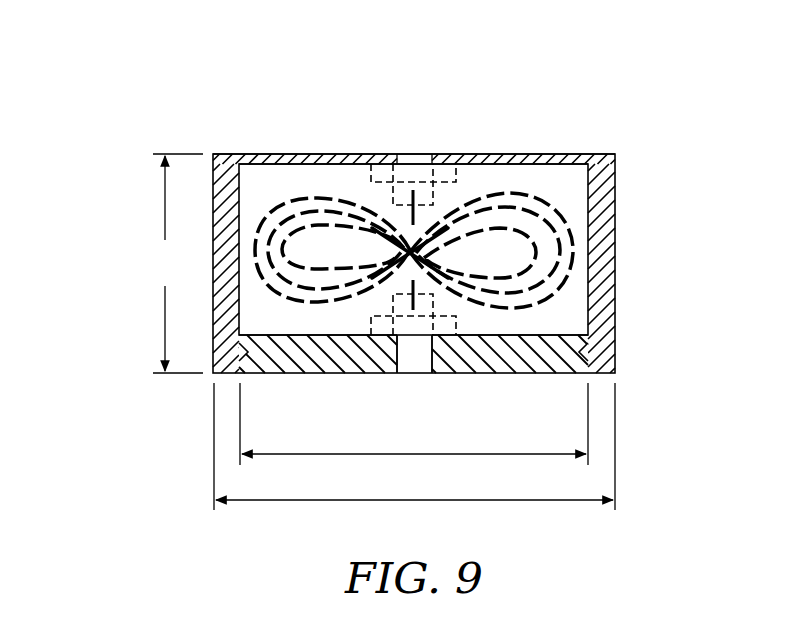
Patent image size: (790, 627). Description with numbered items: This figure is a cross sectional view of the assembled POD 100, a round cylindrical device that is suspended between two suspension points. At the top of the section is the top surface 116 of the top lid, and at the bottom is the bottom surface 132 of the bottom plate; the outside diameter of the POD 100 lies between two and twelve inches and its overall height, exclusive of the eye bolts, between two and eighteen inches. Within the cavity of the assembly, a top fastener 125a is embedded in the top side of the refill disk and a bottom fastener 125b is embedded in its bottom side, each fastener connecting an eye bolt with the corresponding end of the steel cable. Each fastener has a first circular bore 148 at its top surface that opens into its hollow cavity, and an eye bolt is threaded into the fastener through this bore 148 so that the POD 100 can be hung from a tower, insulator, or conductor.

The POD 100 is at (172, 107).
The top surface 116 is at (302, 155).
The top fastener 125a is at (383, 163).
The bottom fastener 125b is at (455, 323).
The bottom surface 132 is at (354, 374).
The first circular bore 148 is at (422, 158).